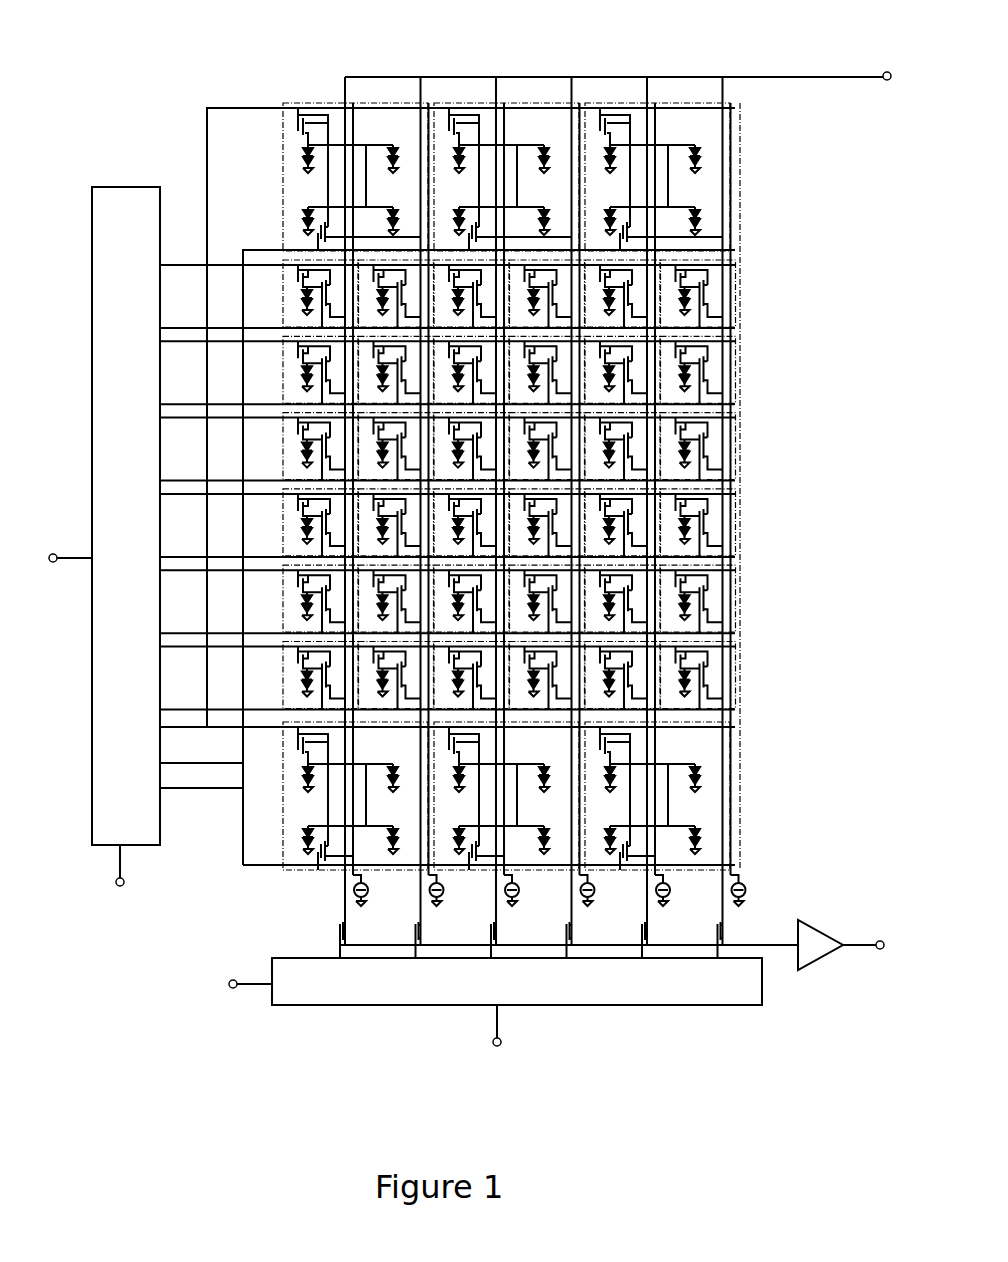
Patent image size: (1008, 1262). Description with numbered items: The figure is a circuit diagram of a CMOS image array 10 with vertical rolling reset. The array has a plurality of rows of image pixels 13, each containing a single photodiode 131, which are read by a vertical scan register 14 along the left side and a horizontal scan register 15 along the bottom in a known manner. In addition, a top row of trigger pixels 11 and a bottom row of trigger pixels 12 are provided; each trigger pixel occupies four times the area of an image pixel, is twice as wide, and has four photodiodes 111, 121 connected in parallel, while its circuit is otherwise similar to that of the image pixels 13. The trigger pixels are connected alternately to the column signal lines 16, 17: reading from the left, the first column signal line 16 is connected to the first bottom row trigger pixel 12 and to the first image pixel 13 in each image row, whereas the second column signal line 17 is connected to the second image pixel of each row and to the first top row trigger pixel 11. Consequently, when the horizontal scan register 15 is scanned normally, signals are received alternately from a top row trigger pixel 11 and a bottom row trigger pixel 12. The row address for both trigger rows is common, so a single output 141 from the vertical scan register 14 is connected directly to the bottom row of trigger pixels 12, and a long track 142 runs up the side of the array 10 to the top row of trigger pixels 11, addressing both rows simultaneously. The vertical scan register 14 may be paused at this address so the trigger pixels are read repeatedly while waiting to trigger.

The CMOS image array 10 is at (152, 73).
The top row trigger pixel 11 is at (275, 200).
The photodiode 111 is at (260, 155).
The bottom row trigger pixel 12 is at (280, 795).
The photodiode 121 is at (294, 872).
The image pixel 13 is at (740, 272).
The photodiode 131 is at (742, 377).
The vertical scan register 14 is at (137, 187).
The output 141 is at (222, 790).
The long track 142 is at (243, 768).
The horizontal scan register 15 is at (272, 1000).
The first column signal line 16 is at (347, 910).
The second column signal line 17 is at (422, 912).